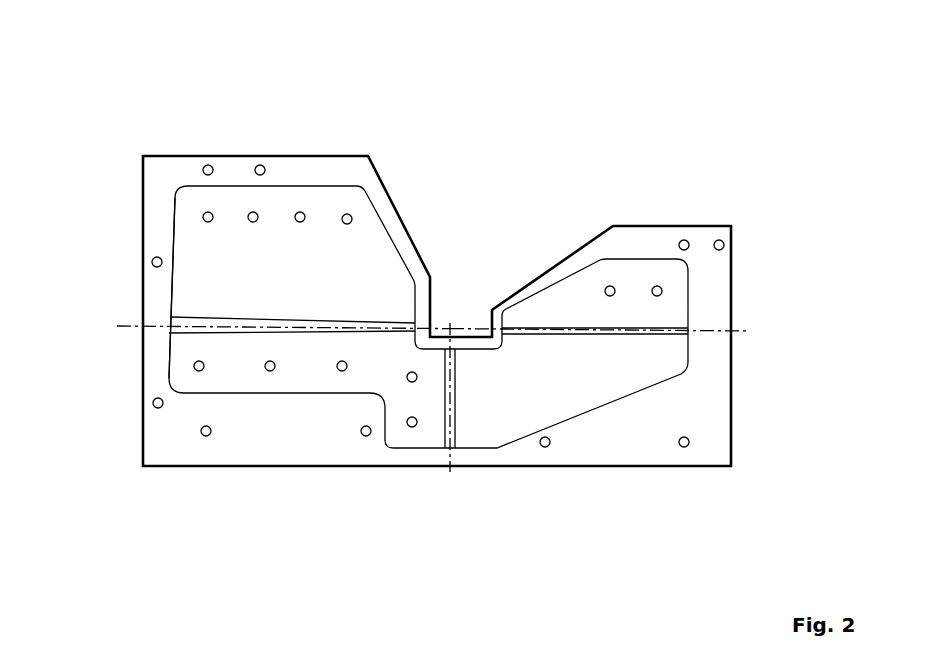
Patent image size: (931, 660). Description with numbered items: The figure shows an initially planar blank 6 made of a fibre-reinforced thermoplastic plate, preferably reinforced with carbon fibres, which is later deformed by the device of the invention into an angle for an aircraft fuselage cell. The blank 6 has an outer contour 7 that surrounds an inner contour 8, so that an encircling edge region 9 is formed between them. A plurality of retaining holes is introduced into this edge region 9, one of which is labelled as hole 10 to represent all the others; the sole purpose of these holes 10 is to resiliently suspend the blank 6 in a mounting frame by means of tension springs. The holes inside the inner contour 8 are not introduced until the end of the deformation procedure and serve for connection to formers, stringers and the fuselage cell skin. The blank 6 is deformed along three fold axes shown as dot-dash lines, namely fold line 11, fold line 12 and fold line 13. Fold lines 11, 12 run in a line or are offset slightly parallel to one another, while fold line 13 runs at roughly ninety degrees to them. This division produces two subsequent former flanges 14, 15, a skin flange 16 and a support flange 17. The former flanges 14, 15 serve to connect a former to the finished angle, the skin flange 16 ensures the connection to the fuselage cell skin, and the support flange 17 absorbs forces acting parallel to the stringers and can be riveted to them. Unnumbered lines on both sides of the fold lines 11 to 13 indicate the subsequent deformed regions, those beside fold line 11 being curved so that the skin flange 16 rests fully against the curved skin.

The blank 6 is at (419, 131).
The outer contour 7 is at (168, 155).
The inner contour 8 is at (173, 239).
The edge region 9 is at (166, 186).
The retaining hole 10 is at (152, 267).
The fold line 11 is at (145, 328).
The fold line 12 is at (749, 331).
The fold line 13 is at (449, 455).
The former flange 14 is at (392, 302).
The former flange 15 is at (586, 302).
The skin flange 16 is at (390, 363).
The support flange 17 is at (586, 360).